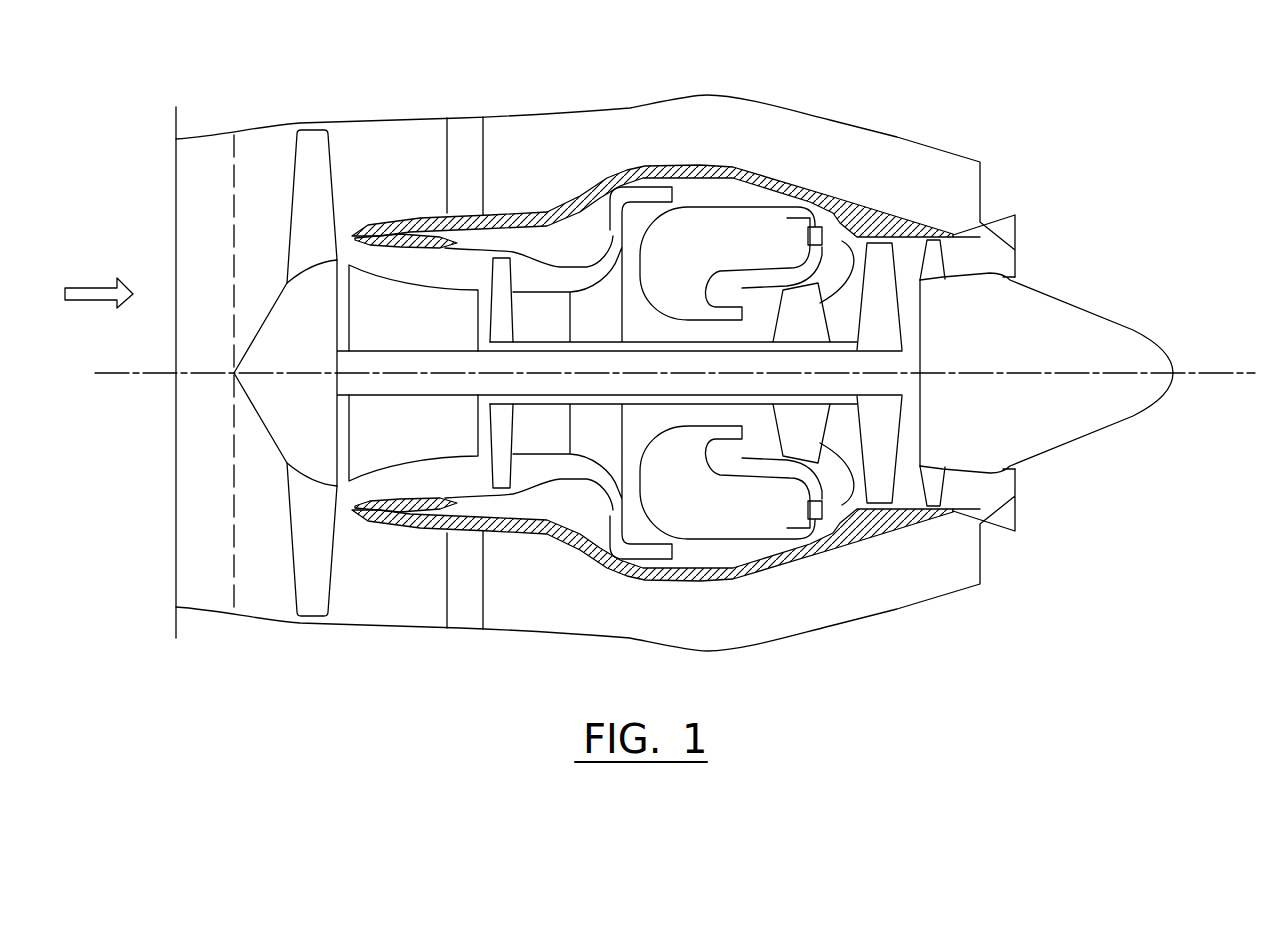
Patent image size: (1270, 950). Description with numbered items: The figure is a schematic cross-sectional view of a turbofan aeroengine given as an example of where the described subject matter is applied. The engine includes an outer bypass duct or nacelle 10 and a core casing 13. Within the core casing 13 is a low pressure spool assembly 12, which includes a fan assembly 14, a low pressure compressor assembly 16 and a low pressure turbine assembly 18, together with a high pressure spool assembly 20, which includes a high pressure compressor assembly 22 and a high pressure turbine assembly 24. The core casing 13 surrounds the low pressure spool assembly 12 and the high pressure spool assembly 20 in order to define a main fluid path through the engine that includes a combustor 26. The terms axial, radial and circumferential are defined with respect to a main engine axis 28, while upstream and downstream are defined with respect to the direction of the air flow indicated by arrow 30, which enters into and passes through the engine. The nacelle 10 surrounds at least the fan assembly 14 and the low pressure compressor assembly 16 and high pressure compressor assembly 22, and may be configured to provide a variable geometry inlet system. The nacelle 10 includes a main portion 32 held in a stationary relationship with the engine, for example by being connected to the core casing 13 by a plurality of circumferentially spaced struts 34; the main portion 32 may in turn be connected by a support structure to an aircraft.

The nacelle 10 is at (623, 108).
The low pressure spool assembly 12 is at (420, 352).
The core casing 13 is at (645, 165).
The fan assembly 14 is at (290, 183).
The low pressure compressor assembly 16 is at (367, 312).
The low pressure turbine assembly 18 is at (900, 230).
The high pressure spool assembly 20 is at (550, 342).
The high pressure compressor assembly 22 is at (513, 277).
The high pressure turbine assembly 24 is at (833, 197).
The combustor 26 is at (775, 225).
The main engine axis 28 is at (1205, 370).
The arrow 30 is at (83, 287).
The main portion 32 is at (330, 120).
The struts 34 is at (460, 133).